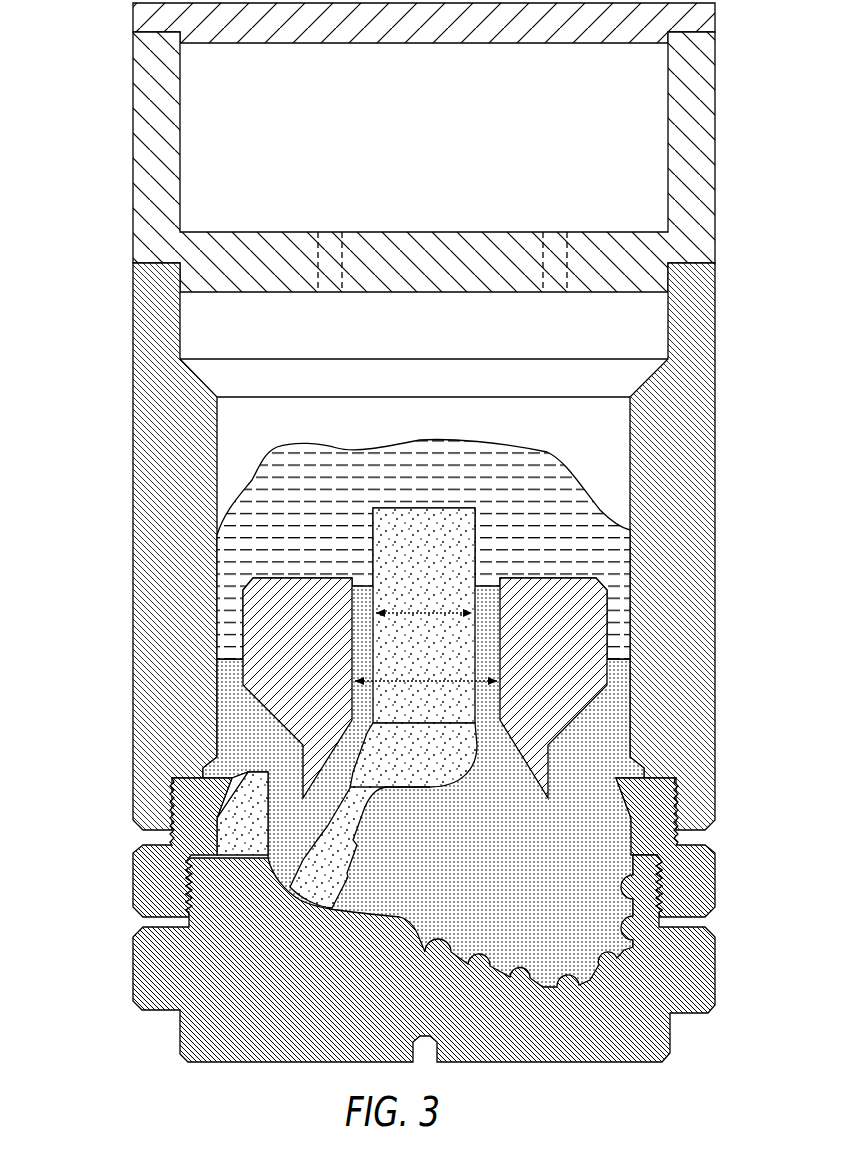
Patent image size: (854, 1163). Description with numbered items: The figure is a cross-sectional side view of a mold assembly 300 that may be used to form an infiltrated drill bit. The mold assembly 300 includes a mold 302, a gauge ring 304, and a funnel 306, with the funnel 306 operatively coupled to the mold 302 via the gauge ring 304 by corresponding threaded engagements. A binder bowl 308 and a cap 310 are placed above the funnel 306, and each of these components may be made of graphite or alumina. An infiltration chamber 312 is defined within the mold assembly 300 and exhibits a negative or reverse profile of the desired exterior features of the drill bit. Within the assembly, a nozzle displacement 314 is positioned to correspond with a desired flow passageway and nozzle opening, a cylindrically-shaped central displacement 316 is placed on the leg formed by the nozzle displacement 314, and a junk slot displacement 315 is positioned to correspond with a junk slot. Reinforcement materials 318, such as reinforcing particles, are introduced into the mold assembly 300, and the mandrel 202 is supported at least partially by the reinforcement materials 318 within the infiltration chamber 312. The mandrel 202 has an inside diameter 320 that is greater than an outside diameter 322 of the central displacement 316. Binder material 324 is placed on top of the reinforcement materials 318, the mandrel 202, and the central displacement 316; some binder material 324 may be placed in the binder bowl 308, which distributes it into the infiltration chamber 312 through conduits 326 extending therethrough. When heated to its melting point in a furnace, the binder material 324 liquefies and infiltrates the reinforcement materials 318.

The mold assembly 300 is at (383, 552).
The mold 302 is at (113, 969).
The gauge ring 304 is at (113, 878).
The funnel 306 is at (114, 479).
The binder bowl 308 is at (128, 195).
The cap 310 is at (128, 13).
The infiltration chamber 312 is at (600, 436).
The nozzle displacement 314 is at (335, 888).
The junk slot displacement 315 is at (259, 836).
The central displacement 316 is at (440, 575).
The reinforcement materials 318 is at (529, 889).
The inside diameter 320 is at (455, 678).
The outside diameter 322 is at (417, 616).
The binder material 324 is at (380, 447).
The conduits 326 is at (337, 280).
The mandrel 202 is at (314, 652).